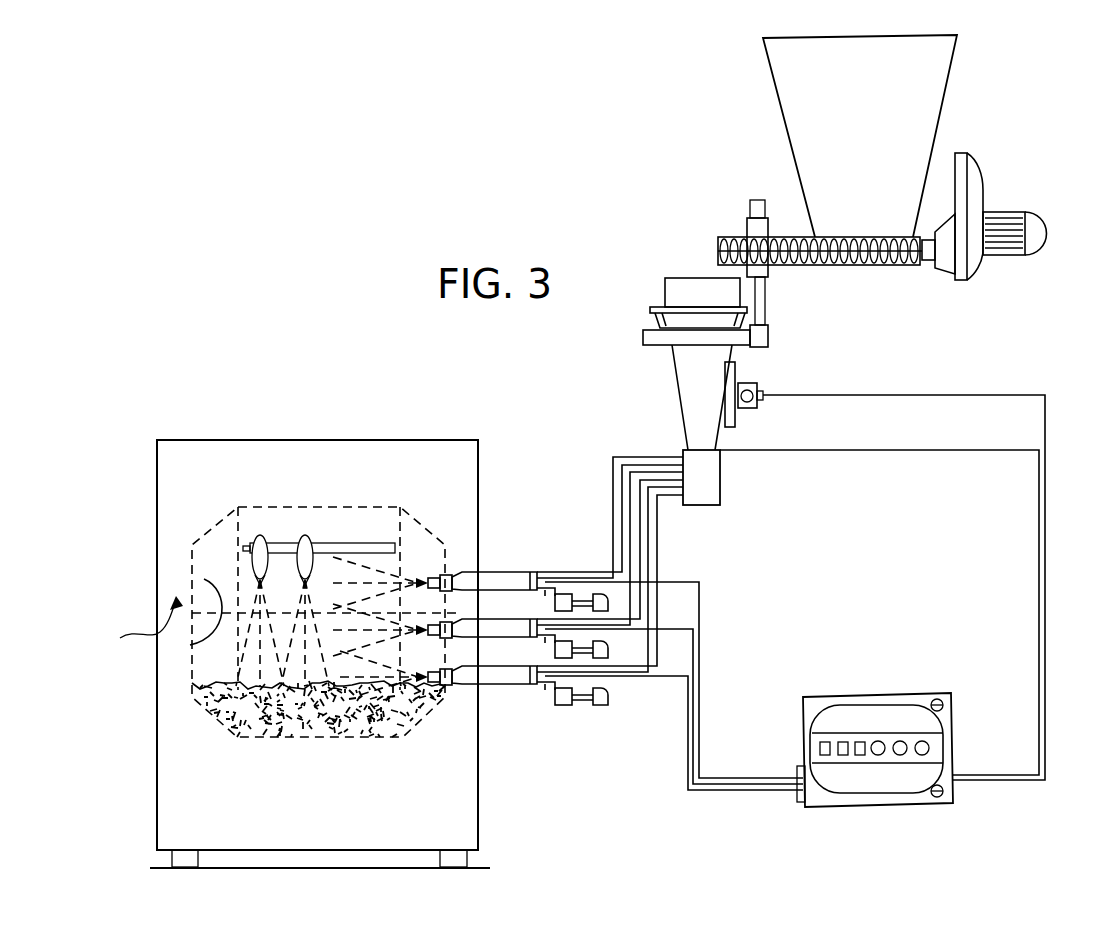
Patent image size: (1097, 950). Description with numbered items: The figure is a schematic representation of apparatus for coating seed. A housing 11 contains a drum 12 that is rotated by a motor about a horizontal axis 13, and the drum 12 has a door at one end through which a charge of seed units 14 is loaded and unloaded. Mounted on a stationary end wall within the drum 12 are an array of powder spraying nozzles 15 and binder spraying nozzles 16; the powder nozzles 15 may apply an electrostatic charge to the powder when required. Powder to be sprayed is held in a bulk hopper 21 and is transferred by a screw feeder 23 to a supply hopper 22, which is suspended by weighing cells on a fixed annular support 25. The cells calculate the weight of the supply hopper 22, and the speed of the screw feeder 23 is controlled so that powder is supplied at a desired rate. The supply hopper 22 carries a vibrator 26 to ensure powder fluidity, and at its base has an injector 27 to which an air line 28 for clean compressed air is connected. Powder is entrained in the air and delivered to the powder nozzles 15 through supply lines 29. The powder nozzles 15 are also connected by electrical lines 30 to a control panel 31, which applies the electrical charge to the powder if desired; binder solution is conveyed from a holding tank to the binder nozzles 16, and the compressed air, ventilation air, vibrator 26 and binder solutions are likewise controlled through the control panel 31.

The housing 11 is at (341, 440).
The drum 12 is at (247, 507).
The horizontal axis 13 is at (155, 614).
The seed units 14 is at (348, 738).
The powder spraying nozzles 15 is at (497, 592).
The binder spraying nozzles 16 is at (308, 540).
The bulk hopper 21 is at (905, 185).
The supply hopper 22 is at (685, 295).
The screw feeder 23 is at (862, 266).
The fixed annular support 25 is at (643, 336).
The vibrator 26 is at (761, 395).
The injector 27 is at (728, 508).
The air line 28 is at (893, 452).
The supply lines 29 is at (606, 553).
The electrical lines 30 is at (700, 717).
The control panel 31 is at (898, 694).